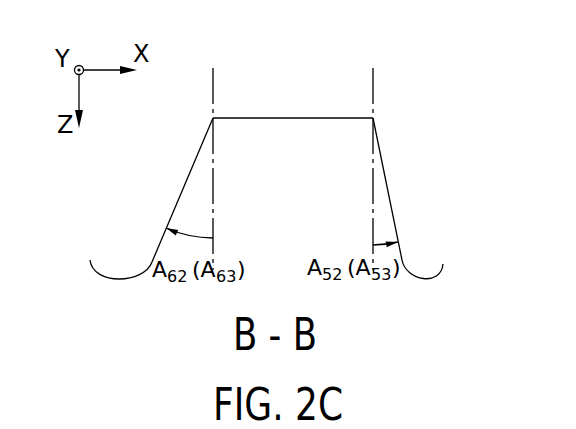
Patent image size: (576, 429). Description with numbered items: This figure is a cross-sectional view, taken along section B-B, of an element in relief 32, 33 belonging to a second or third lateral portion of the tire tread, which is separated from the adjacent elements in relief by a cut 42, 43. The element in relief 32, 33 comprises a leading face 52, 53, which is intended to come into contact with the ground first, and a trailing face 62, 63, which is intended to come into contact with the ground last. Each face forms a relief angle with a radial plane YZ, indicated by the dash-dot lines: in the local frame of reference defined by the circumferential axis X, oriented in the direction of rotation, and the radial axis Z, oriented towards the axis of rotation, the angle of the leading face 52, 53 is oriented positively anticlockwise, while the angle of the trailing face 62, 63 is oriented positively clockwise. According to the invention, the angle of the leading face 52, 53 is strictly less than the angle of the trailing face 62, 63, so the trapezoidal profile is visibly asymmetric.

The element in relief 32 is at (293, 63).
The element in relief 33 is at (295, 101).
The cut 42 is at (439, 228).
The cut 43 is at (427, 264).
The leading face 52 is at (425, 166).
The leading face 53 is at (402, 167).
The trailing face 62 is at (119, 190).
The trailing face 63 is at (158, 191).